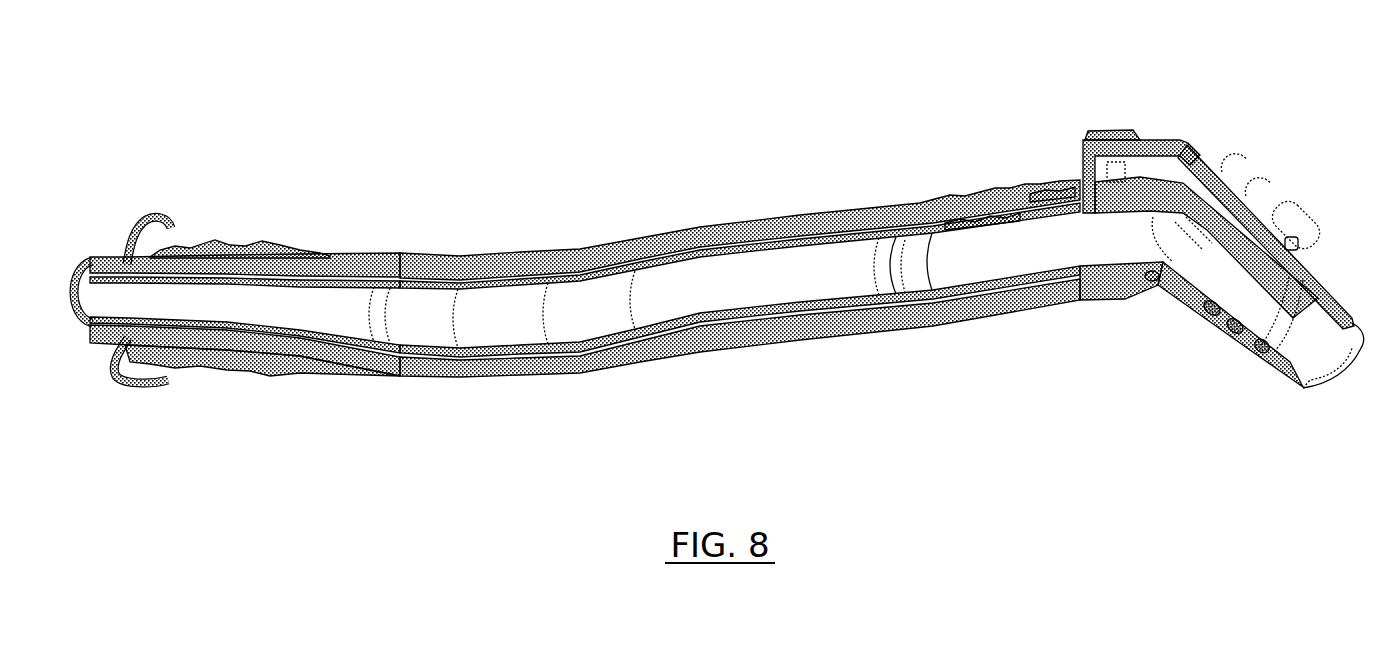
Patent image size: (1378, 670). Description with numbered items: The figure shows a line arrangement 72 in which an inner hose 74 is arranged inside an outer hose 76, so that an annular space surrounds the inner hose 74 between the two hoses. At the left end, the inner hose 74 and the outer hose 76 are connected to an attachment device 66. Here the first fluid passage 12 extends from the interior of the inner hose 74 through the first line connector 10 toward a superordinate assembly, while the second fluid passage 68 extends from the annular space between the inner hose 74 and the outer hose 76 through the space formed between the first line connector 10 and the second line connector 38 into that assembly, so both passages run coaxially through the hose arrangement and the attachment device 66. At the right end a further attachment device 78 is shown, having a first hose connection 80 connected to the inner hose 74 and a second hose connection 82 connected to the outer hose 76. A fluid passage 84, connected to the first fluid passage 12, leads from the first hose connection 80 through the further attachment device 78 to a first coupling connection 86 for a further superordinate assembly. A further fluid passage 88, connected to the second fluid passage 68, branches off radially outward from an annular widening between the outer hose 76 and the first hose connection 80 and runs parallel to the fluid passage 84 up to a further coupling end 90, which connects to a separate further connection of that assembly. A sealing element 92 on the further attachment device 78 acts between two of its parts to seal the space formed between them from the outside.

The first line connector 10 is at (93, 259).
The first fluid passage 12 is at (310, 303).
The second line connector 38 is at (233, 246).
The attachment device 66 is at (210, 196).
The second fluid passage 68 is at (258, 273).
The line arrangement 72 is at (660, 98).
The inner hose 74 is at (591, 275).
The outer hose 76 is at (667, 243).
The further attachment device 78 is at (1104, 98).
The first hose connection 80 is at (956, 226).
The second hose connection 82 is at (1047, 202).
The fluid passage 84 is at (1217, 287).
The first coupling connection 86 is at (1337, 310).
The further fluid passage 88 is at (1193, 173).
The further coupling end 90 is at (1273, 213).
The sealing element 92 is at (1133, 284).